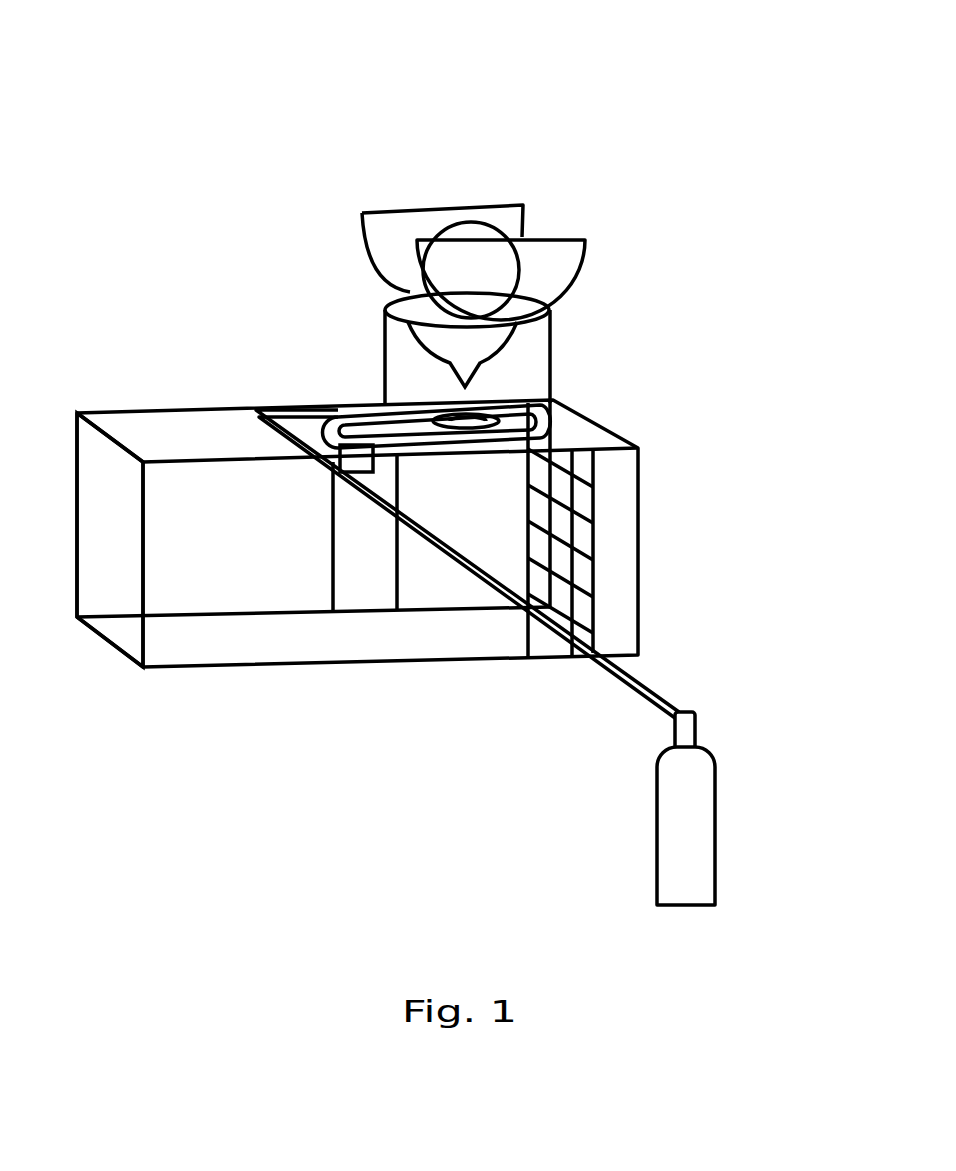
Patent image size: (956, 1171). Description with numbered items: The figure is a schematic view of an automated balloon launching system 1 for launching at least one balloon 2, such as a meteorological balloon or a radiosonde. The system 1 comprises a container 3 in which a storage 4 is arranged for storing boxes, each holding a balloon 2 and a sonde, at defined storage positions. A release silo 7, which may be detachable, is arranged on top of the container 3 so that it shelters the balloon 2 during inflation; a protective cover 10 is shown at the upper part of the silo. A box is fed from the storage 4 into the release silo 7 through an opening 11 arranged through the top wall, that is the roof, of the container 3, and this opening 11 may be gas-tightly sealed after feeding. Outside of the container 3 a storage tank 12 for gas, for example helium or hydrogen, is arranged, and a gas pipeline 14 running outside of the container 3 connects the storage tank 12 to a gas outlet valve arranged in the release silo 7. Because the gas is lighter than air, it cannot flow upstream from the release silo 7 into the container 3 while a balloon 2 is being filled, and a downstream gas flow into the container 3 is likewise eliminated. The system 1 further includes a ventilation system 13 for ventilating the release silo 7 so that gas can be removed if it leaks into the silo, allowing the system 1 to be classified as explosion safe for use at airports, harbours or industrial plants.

The automated balloon launching system 1 is at (325, 325).
The balloon 2 is at (438, 222).
The container 3 is at (230, 405).
The storage 4 is at (617, 503).
The release silo 7 is at (553, 335).
The protective cover 10 is at (508, 218).
The opening 11 is at (478, 420).
The storage tank 12 is at (715, 827).
The ventilation system 13 is at (360, 462).
The gas pipeline 14 is at (645, 680).